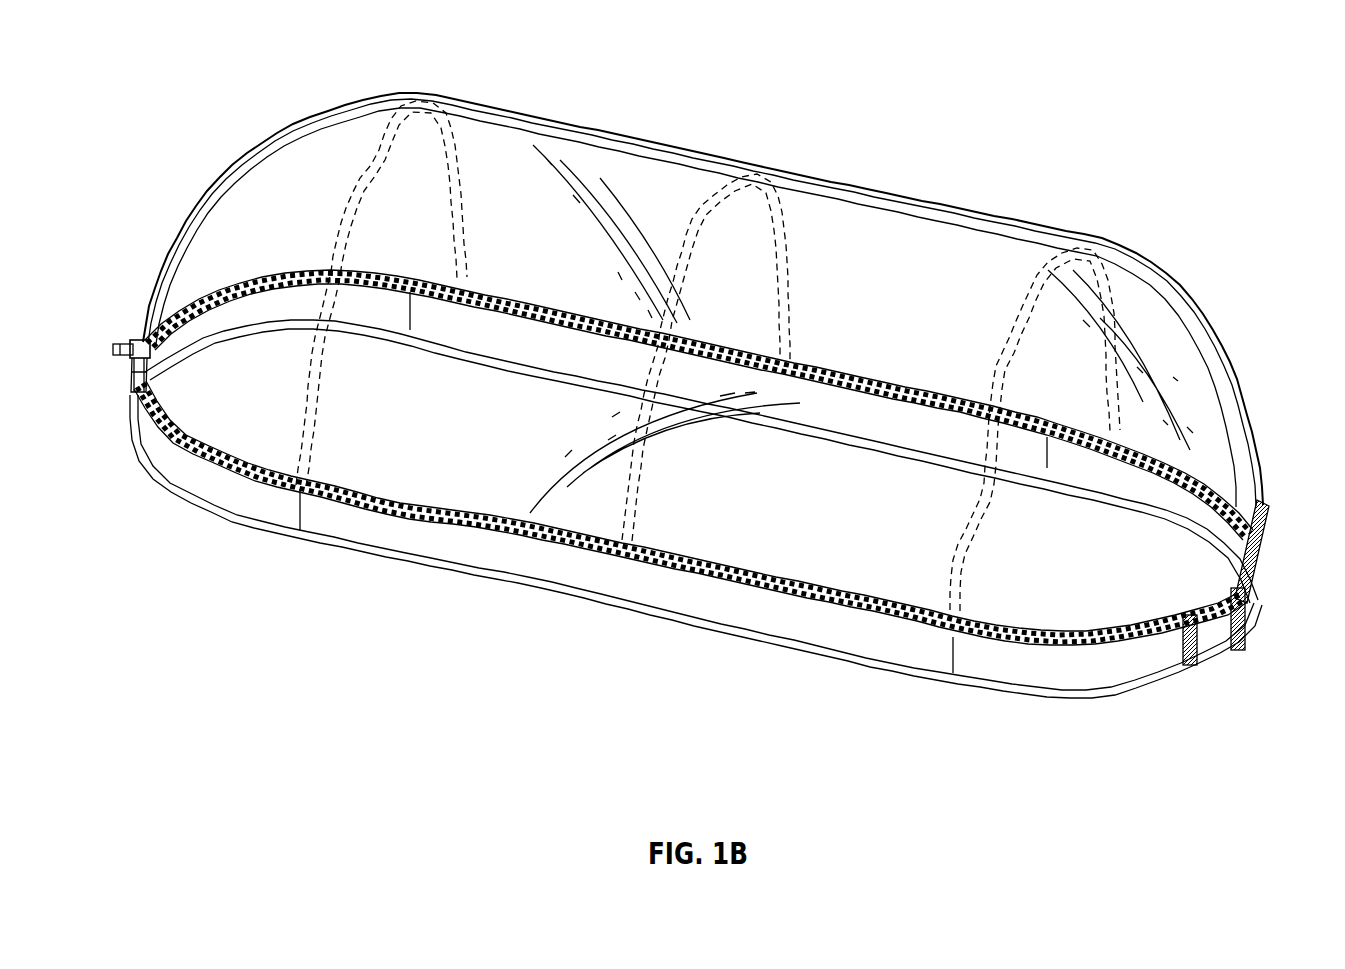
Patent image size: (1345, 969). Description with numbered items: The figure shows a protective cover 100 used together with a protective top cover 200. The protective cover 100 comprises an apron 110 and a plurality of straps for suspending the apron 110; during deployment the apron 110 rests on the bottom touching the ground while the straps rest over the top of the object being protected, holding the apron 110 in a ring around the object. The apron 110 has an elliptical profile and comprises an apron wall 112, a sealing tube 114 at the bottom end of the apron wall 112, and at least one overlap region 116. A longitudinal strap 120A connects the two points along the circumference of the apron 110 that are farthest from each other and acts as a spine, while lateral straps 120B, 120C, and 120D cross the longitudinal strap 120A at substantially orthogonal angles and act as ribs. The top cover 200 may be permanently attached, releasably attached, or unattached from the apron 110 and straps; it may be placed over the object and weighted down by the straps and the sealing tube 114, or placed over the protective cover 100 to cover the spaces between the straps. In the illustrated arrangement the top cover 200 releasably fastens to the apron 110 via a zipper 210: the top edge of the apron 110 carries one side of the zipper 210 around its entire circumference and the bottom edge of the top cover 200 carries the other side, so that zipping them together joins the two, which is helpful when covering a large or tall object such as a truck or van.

The protective cover 100 is at (144, 94).
The apron 110 is at (808, 677).
The apron wall 112 is at (410, 546).
The sealing tube 114 is at (1050, 698).
The overlap region 116 is at (1217, 620).
The longitudinal strap 120A is at (523, 124).
The lateral strap 120B is at (373, 143).
The lateral strap 120C is at (790, 217).
The lateral strap 120D is at (1040, 283).
The top cover 200 is at (739, 327).
The zipper 210 is at (267, 480).